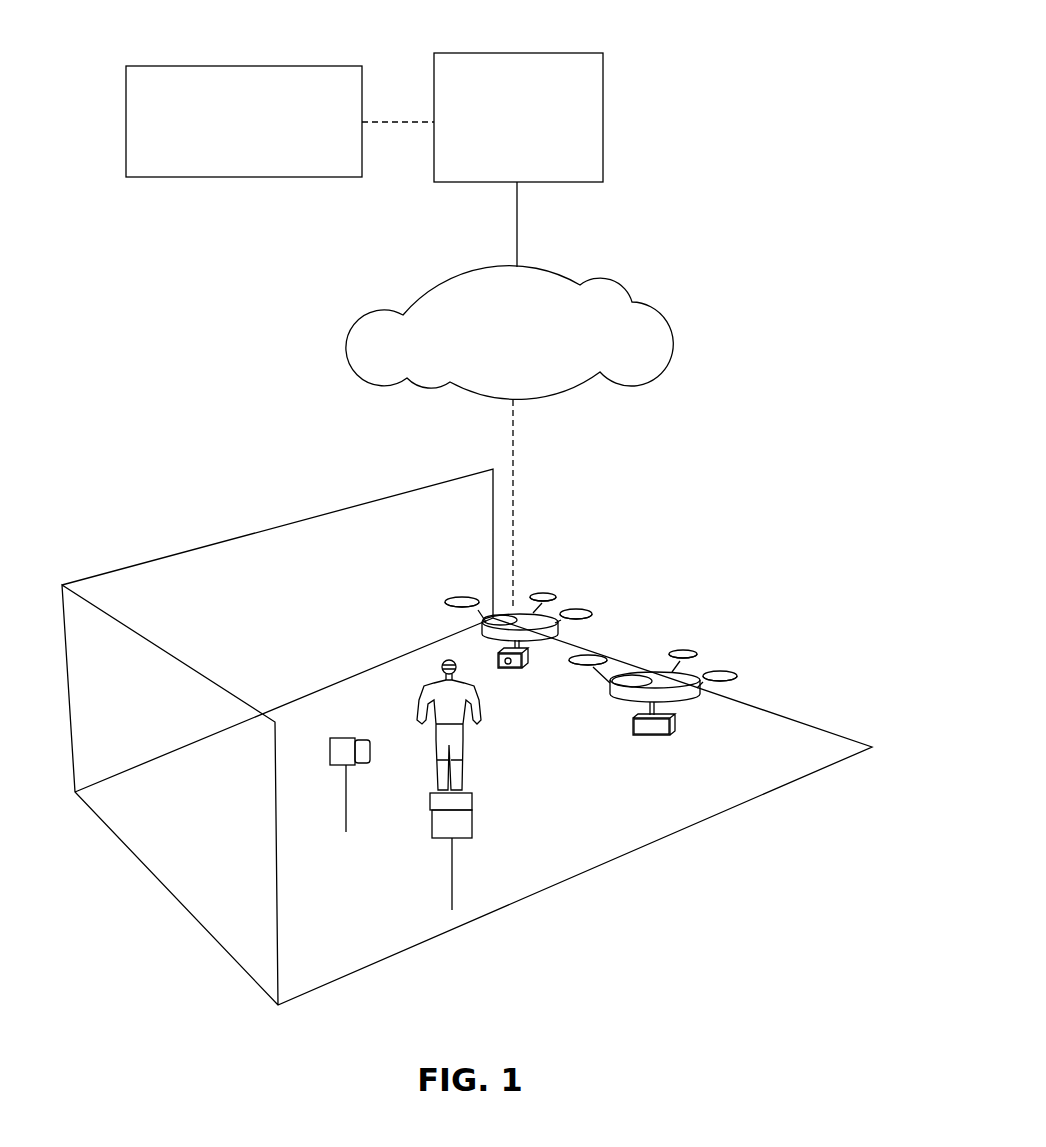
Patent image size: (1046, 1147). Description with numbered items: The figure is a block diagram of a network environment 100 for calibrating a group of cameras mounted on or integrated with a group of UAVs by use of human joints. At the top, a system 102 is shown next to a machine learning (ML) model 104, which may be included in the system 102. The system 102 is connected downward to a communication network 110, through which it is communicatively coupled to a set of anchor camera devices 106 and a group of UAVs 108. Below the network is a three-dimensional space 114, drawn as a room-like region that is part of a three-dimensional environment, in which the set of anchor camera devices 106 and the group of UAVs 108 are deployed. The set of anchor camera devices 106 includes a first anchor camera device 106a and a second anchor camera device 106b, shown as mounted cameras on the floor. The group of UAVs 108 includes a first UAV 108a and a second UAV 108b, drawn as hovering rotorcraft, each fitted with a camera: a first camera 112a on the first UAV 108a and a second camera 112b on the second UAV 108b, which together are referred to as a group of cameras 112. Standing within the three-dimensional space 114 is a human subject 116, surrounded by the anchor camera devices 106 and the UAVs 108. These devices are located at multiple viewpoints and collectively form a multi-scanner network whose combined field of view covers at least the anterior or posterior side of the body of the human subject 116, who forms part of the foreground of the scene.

The network environment 100 is at (793, 58).
The system 102 is at (518, 117).
The machine learning (ML) model 104 is at (244, 121).
The set of anchor camera devices 106 is at (259, 859).
The first anchor camera device 106a is at (342, 753).
The second anchor camera device 106b is at (448, 822).
The group of UAVs 108 is at (591, 592).
The first UAV 108a is at (518, 613).
The second UAV 108b is at (660, 677).
The communication network 110 is at (509, 333).
The group of cameras 112 is at (596, 821).
The first camera 112a is at (528, 667).
The second camera 112b is at (657, 735).
The three-dimensional (3D) space 114 is at (238, 580).
The human subject 116 is at (435, 688).